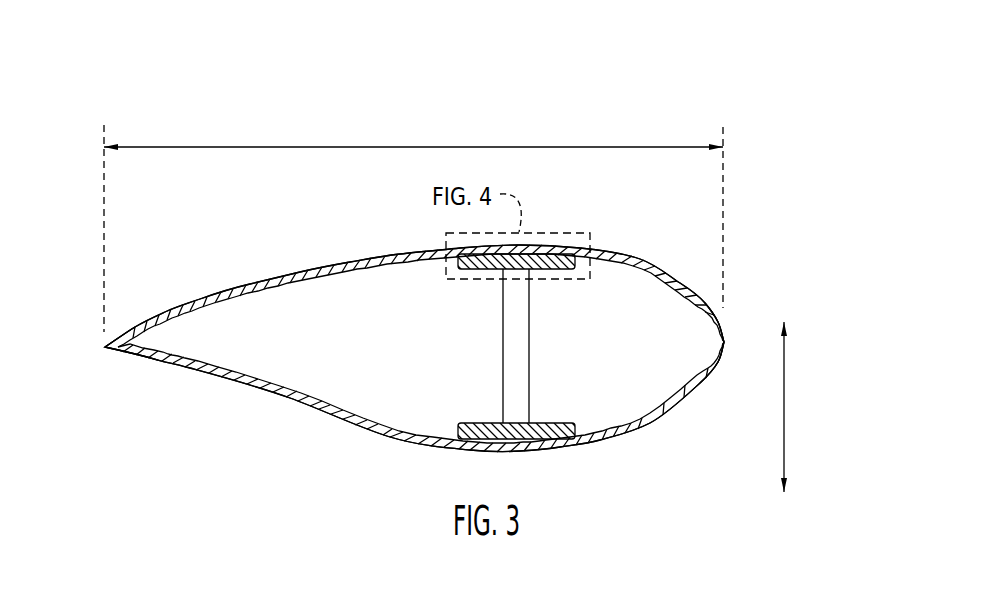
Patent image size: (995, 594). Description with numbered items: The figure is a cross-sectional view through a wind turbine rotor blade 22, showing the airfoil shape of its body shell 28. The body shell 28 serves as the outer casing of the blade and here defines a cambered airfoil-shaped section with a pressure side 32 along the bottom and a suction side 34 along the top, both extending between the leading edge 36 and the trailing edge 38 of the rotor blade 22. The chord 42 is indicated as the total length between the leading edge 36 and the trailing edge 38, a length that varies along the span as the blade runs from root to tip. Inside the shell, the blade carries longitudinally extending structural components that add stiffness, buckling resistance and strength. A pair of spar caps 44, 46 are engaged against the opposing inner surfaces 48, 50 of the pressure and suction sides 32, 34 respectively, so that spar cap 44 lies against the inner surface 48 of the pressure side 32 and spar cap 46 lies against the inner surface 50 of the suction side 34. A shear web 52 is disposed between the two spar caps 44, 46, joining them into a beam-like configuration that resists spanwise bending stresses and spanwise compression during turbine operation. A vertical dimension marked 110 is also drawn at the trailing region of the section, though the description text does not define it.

The rotor blade 22 is at (645, 108).
The body shell 28 is at (296, 259).
The pressure side 32 is at (357, 428).
The suction side 34 is at (395, 252).
The leading edge 36 is at (727, 334).
The trailing edge 38 is at (103, 345).
The chord 42 is at (275, 147).
The spar cap 44 is at (548, 440).
The spar cap 46 is at (549, 255).
The inner surface 48 is at (268, 384).
The inner surface 50 is at (335, 273).
The shear web 52 is at (529, 382).
The thickness direction 110 is at (784, 402).